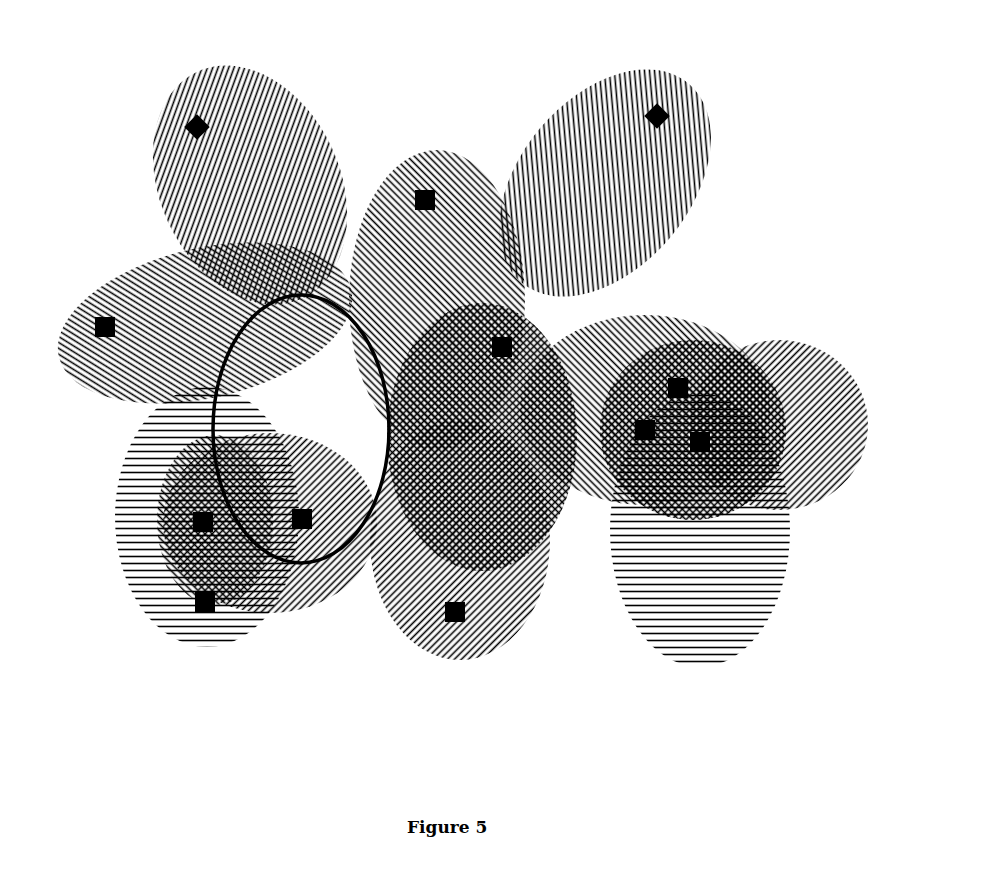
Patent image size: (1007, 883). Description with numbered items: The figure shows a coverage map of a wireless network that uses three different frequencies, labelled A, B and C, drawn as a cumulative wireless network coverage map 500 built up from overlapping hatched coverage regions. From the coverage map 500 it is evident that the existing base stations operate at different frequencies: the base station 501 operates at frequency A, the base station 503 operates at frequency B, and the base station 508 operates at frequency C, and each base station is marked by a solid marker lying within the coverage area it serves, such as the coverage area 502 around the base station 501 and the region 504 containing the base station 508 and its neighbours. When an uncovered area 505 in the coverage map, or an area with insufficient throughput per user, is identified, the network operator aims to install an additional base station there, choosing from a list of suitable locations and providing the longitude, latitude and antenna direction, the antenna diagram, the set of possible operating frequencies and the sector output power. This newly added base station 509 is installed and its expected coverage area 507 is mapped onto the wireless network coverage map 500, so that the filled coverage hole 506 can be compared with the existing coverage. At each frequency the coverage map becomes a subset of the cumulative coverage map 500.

The wireless network coverage map 500 is at (420, 738).
The base station 501 is at (192, 118).
The coverage area of frequency A 502 is at (255, 132).
The base station 503 is at (686, 91).
The cluster of access points 504 is at (697, 343).
The uncovered area 505 is at (320, 420).
The coverage hole region 506 is at (140, 413).
The expected coverage area 507 is at (120, 513).
The base station 508 is at (167, 633).
The newly added base station 509 is at (288, 612).